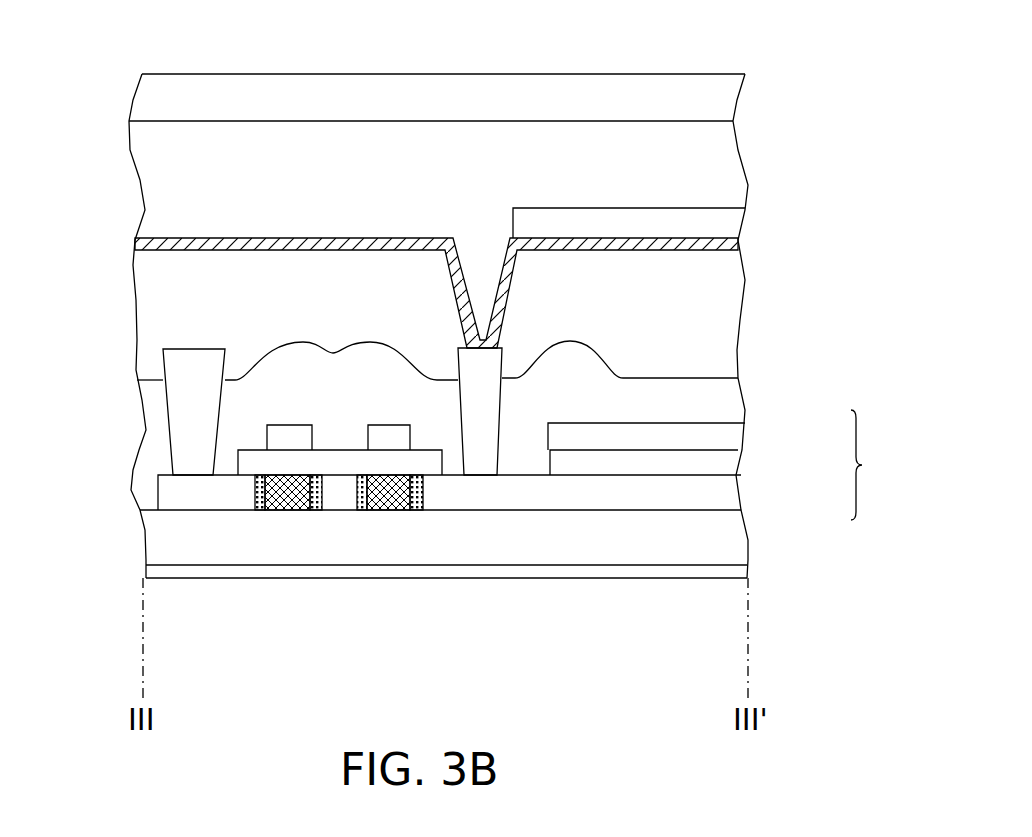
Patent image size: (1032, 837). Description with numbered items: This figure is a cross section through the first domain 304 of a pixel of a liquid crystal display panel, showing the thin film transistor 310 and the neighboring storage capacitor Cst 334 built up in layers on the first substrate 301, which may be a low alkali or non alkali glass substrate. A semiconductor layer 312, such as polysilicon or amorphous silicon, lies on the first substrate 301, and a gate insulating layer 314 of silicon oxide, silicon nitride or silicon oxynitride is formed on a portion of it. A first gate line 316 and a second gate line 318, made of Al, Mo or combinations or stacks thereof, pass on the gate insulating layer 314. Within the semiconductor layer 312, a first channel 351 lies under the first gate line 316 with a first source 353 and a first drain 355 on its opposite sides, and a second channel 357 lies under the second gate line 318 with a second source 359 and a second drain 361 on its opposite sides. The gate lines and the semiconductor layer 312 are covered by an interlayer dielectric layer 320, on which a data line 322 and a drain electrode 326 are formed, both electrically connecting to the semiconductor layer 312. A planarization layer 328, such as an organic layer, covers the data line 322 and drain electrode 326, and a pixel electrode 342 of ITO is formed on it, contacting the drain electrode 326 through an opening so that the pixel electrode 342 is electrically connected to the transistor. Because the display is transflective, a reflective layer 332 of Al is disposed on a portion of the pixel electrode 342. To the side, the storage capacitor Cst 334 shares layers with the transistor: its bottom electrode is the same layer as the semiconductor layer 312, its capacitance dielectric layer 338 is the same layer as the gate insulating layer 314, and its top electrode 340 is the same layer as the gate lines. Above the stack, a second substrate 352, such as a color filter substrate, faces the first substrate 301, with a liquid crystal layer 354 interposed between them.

The first substrate 301 is at (740, 545).
The first domain 304 is at (447, 579).
The thin film transistor 310 is at (207, 588).
The semiconductor layer 312 is at (725, 492).
The gate insulating layer 314 is at (252, 464).
The first gate line 316 is at (272, 436).
The second gate line 318 is at (402, 432).
The interlayer dielectric layer 320 is at (737, 398).
The data line 322 is at (170, 364).
The drain electrode 326 is at (472, 357).
The planarization layer 328 is at (743, 313).
The reflective layer 332 is at (638, 218).
The storage capacitor Cst 334 is at (885, 465).
The capacitance dielectric layer 338 is at (725, 468).
The top electrode 340 is at (722, 435).
The pixel electrode 342 is at (160, 245).
The first channel 351 is at (287, 510).
The second substrate 352 is at (167, 94).
The first source 353 is at (263, 510).
The liquid crystal layer 354 is at (167, 178).
The first drain 355 is at (320, 510).
The second channel 357 is at (383, 510).
The second source 359 is at (363, 510).
The second drain 361 is at (417, 510).